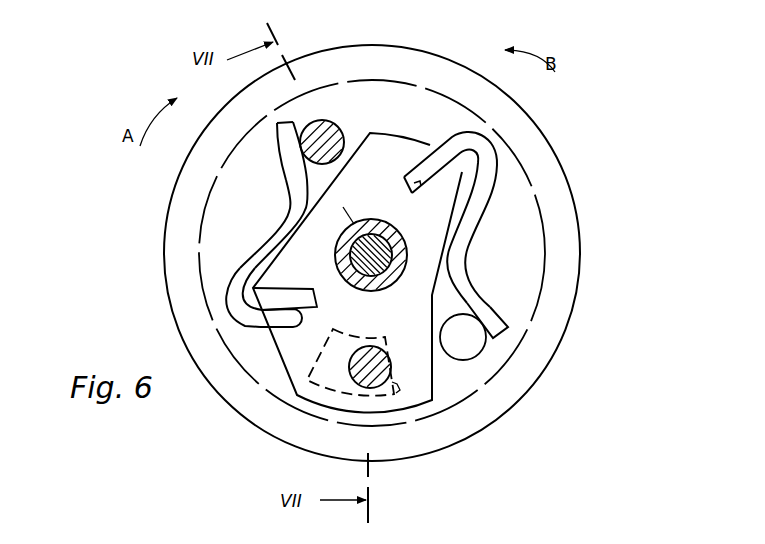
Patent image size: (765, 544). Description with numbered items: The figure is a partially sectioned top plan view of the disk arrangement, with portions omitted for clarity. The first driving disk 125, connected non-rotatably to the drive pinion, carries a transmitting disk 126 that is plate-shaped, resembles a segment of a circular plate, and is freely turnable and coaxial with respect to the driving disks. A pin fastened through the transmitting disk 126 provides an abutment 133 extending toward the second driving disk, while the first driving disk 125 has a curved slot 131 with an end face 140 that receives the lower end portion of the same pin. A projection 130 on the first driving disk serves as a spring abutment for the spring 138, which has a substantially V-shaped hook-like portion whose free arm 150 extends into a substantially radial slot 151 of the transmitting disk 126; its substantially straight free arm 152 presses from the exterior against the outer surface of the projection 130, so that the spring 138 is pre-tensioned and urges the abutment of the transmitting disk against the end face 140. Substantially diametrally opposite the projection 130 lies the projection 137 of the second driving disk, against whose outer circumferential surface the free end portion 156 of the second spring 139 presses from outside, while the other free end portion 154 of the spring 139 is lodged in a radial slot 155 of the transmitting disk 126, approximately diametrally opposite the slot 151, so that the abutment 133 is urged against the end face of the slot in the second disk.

The first driving disk 125 is at (502, 403).
The transmitting disk 126 is at (297, 353).
The projection 130 is at (475, 342).
The curved slot 131 is at (313, 382).
The abutment 133 is at (377, 380).
The projection 137 is at (340, 123).
The spring 138 is at (362, 202).
The second spring 139 is at (265, 232).
The end face 140 is at (398, 392).
The free arm 150 is at (412, 182).
The radial slot 151 is at (400, 173).
The straight free arm 152 is at (490, 313).
The free end portion 154 is at (303, 292).
The radial slot 155 is at (268, 328).
The free end portion 156 is at (280, 157).